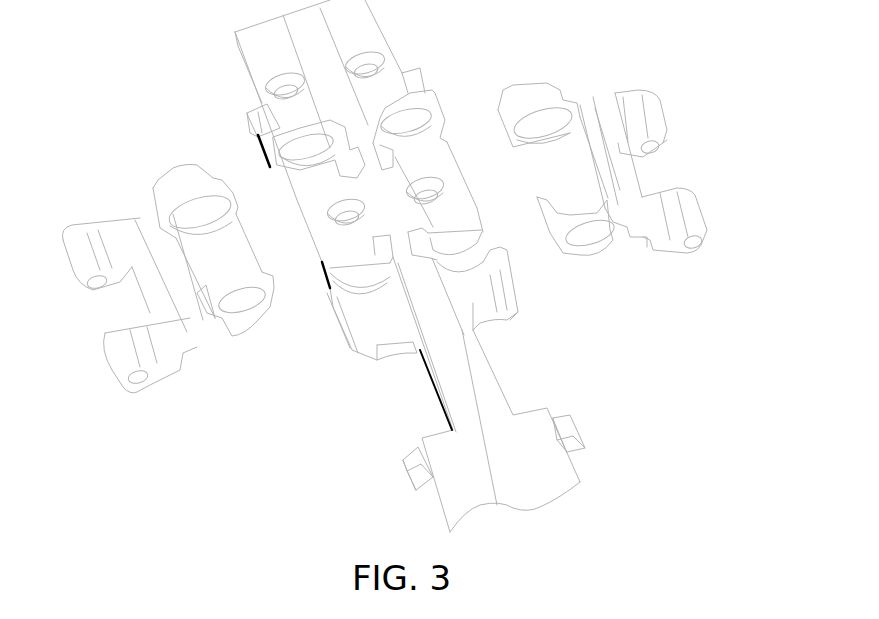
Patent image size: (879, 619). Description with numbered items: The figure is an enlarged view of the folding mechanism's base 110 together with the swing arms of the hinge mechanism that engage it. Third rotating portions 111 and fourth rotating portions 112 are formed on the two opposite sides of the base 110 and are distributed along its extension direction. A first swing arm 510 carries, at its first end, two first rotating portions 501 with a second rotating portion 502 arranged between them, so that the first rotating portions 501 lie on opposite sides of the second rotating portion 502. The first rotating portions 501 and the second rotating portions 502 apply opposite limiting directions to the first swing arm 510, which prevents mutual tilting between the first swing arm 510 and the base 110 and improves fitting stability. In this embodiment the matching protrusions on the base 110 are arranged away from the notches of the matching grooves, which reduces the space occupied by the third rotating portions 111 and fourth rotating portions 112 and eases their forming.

The base 110 is at (468, 375).
The third rotating portion 111 is at (432, 136).
The fourth rotating portion 112 is at (409, 120).
The first rotating portion 501 is at (554, 124).
The second rotating portion 502 is at (537, 82).
The first swing arm 510 is at (615, 170).